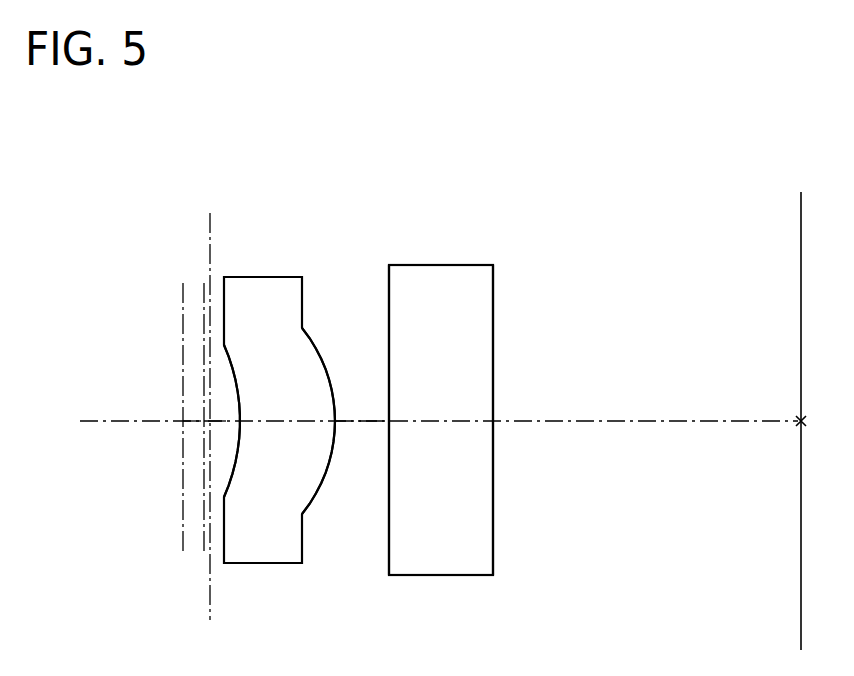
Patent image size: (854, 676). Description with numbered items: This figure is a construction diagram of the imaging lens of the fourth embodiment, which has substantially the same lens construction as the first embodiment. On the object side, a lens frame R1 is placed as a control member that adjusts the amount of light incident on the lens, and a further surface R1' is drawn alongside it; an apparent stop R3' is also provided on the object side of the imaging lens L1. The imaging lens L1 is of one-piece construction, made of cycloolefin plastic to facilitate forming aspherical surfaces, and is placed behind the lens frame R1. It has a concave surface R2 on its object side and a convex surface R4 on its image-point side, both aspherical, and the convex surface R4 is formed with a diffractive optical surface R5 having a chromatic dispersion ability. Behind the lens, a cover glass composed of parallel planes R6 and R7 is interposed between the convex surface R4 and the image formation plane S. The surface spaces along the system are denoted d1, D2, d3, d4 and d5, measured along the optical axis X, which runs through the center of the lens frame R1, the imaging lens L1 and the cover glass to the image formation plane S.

The lens frame R1 is at (128, 360).
The image-side surface of aperture stop R1' is at (162, 468).
The apparent stop R3' is at (210, 433).
The concave surface R2 is at (239, 418).
The convex surface R4 is at (312, 340).
The diffractive optical surface R5 is at (312, 502).
The parallel plane of cover glass R6 is at (389, 541).
The parallel plane of cover glass R7 is at (493, 512).
The imaging lens L1 is at (282, 543).
The surface space d1 is at (193, 418).
The surface space D2 is at (225, 421).
The surface space d3 is at (284, 457).
The surface space d4 is at (353, 421).
The surface space d5 is at (441, 420).
The optical axis X is at (439, 402).
The image formation plane S is at (813, 421).